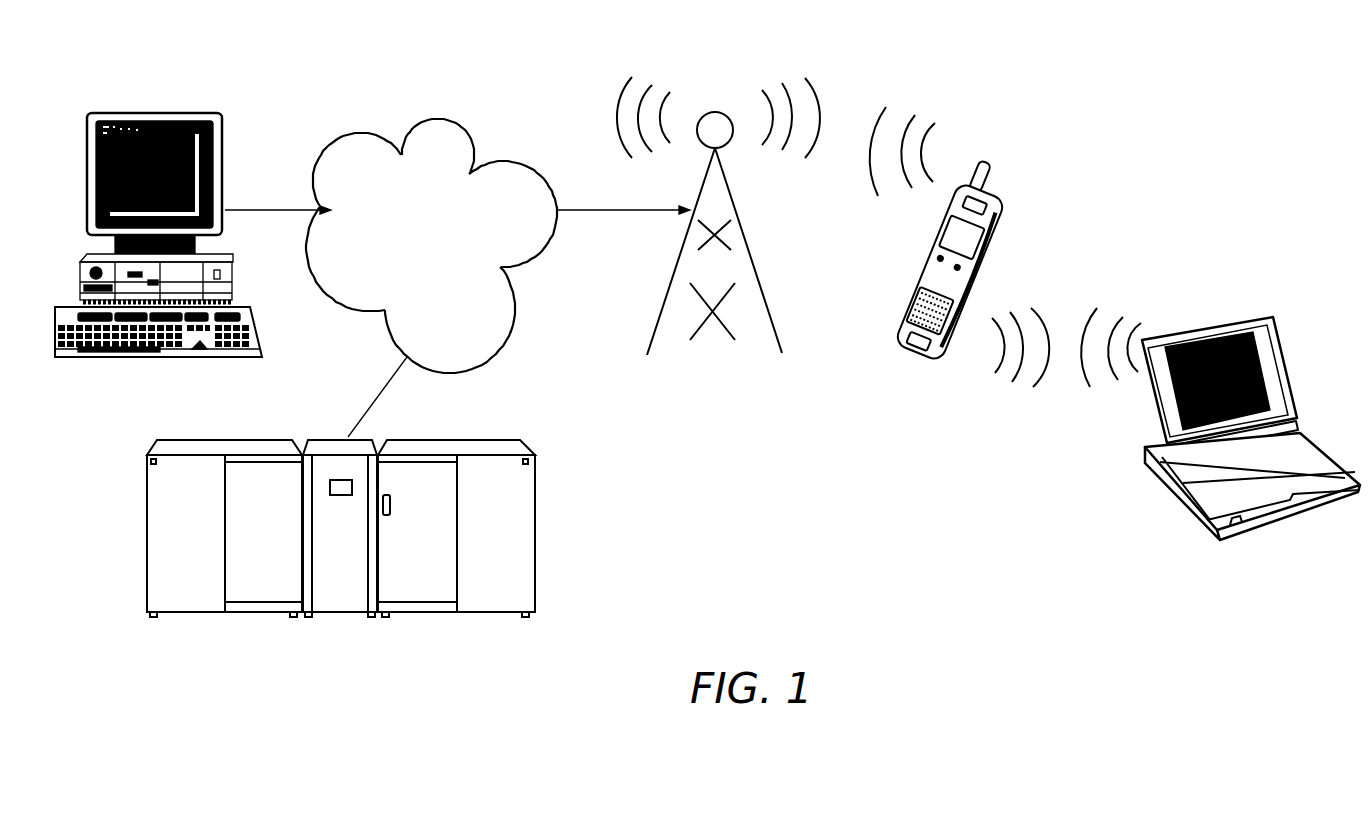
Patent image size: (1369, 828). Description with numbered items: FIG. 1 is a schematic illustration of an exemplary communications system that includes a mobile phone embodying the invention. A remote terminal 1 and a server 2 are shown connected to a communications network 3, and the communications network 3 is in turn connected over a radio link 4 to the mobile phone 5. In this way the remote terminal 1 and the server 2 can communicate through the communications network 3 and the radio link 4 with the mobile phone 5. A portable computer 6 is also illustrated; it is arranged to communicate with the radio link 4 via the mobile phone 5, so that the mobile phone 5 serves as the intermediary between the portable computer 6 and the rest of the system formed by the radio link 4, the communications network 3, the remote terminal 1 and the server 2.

The remote terminal 1 is at (180, 113).
The server 2 is at (537, 530).
The communications network 3 is at (440, 115).
The radio link 4 is at (713, 112).
The mobile phone 5 is at (967, 308).
The portable computer 6 is at (1177, 330).